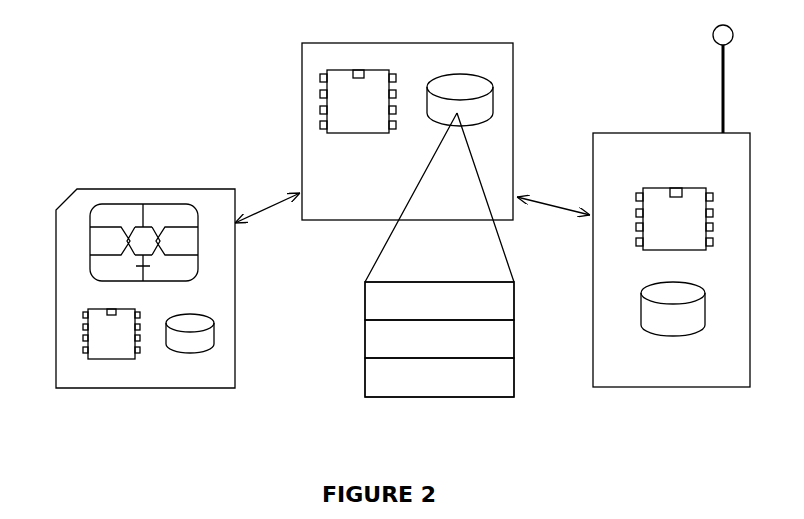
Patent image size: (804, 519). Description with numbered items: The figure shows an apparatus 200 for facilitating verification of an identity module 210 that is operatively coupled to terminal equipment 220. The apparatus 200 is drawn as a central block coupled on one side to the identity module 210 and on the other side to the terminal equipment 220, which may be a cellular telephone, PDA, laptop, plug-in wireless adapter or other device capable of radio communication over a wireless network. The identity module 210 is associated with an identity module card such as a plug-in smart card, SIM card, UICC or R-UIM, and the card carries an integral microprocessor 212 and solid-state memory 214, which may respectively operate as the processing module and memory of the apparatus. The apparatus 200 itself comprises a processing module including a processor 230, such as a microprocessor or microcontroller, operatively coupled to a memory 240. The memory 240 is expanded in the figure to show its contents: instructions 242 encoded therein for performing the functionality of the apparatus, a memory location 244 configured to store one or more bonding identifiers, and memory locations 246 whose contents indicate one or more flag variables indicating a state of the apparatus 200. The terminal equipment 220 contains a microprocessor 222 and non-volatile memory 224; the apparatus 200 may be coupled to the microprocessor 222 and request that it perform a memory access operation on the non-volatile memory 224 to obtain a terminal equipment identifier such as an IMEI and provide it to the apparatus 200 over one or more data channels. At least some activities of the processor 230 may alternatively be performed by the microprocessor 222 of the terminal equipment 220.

The apparatus 200 is at (300, 128).
The identity module 210 is at (110, 190).
The integral microprocessor 212 is at (105, 337).
The solid-state memory 214 is at (188, 343).
The terminal equipment 220 is at (676, 130).
The microprocessor 222 is at (665, 235).
The non-volatile memory 224 is at (655, 313).
The processor 230 is at (350, 103).
The memory 240 is at (478, 109).
The instructions 242 is at (365, 300).
The memory location 244 is at (365, 339).
The memory locations 246 is at (365, 377).